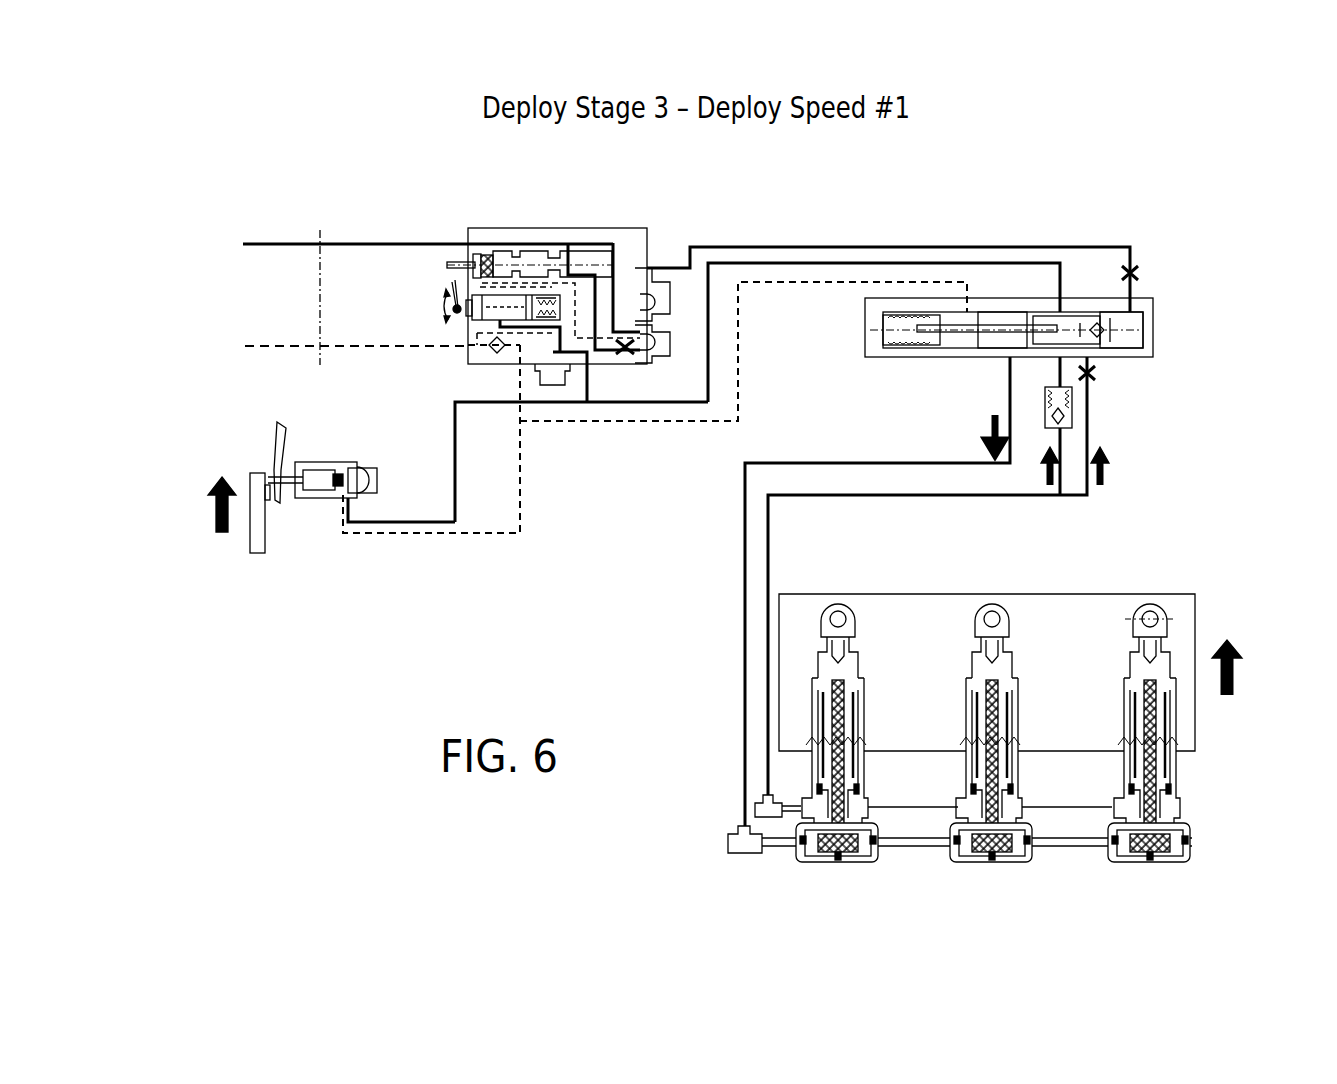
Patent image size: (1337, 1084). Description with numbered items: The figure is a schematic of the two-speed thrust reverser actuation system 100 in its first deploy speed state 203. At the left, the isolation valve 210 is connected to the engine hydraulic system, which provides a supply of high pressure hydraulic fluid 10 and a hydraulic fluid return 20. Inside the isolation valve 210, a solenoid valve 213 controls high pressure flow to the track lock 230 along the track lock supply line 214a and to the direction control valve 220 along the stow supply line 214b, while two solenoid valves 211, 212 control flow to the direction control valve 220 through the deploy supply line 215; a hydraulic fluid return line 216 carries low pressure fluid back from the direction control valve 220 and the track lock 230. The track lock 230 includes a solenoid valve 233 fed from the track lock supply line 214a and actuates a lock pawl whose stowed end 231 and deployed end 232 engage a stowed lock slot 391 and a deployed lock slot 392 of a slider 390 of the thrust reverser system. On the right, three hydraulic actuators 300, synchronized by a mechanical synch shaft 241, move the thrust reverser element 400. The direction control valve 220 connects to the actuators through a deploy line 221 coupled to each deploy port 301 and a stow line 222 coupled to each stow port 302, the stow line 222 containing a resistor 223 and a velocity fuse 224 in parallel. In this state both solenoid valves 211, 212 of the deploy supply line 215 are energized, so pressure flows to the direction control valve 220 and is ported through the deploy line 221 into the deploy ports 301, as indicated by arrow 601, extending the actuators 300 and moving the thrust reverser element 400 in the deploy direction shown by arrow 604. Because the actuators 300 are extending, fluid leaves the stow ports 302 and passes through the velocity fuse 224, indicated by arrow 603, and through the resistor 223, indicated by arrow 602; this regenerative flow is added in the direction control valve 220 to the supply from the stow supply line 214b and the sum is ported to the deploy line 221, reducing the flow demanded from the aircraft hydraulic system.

The two-speed thrust reverser actuation system (TRAS) 100 is at (206, 234).
The supply of high pressure hydraulic fluid 10 is at (365, 243).
The hydraulic fluid return 20 is at (400, 345).
The first deploy speed state 203 is at (972, 123).
The isolation valve 210 is at (466, 240).
The solenoid valve 211 is at (666, 290).
The solenoid valve 212 is at (668, 334).
The solenoid valve 213 is at (552, 386).
The track lock supply line 214a is at (478, 400).
The stow supply line 214b is at (657, 405).
The deploy supply line 215 is at (778, 247).
The hydraulic fluid return line 216 is at (757, 284).
The direction control valve (DCV) 220 is at (1155, 300).
The deploy line 221 is at (743, 617).
The stow line 222 is at (768, 700).
The resistor 223 is at (1097, 373).
The velocity fuse 224 is at (1073, 412).
The track lock 230 is at (357, 462).
The stowed end 231 is at (262, 472).
The deployed end 232 is at (323, 440).
The solenoid valve 233 is at (377, 488).
The mechanical synch shaft 241 is at (1060, 848).
The hydraulic actuator 300 is at (838, 600).
The deploy port 301 is at (1166, 806).
The stow port 302 is at (1115, 800).
The slider 390 is at (250, 480).
The stowed lock slot 391 is at (272, 507).
The deployed lock slot 392 is at (267, 533).
The thrust reverser element 400 is at (940, 647).
The arrow 601 is at (990, 437).
The arrow 602 is at (1045, 467).
The arrow 603 is at (1102, 466).
The arrow 604 is at (1236, 673).